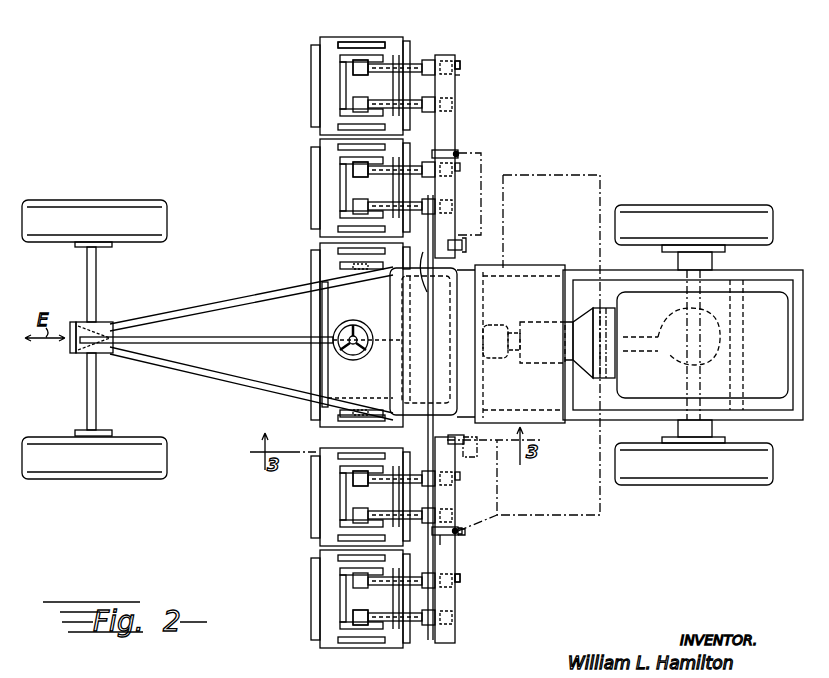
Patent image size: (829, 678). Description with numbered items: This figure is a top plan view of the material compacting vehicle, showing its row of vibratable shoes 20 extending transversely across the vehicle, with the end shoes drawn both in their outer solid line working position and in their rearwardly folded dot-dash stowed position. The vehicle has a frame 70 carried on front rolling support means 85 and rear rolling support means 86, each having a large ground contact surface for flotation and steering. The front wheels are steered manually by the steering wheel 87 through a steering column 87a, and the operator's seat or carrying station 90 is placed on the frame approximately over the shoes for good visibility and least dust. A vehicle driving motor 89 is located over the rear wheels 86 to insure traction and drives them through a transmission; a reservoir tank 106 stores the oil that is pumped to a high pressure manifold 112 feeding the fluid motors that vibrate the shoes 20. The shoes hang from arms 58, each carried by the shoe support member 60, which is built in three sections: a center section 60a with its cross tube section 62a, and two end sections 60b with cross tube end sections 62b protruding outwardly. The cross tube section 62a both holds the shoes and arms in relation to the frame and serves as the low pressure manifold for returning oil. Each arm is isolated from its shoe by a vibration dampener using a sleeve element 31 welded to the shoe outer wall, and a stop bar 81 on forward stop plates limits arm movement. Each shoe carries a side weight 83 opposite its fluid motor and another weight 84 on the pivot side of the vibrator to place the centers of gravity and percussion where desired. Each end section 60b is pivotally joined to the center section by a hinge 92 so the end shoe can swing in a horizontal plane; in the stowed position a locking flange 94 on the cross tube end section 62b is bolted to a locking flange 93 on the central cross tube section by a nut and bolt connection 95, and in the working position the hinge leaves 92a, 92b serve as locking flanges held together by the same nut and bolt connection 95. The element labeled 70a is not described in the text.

The vibratable shoe 20 is at (308, 163).
The sleeve element 31 is at (370, 478).
The arm 58 is at (375, 97).
The shoe support member 60 is at (457, 470).
The center section 60a is at (503, 178).
The end section 60b is at (458, 78).
The cross tube section 62a is at (440, 457).
The cross tube end section 62b is at (445, 116).
The frame 70 is at (247, 297).
The frame cross member 70a is at (476, 301).
The stop bar 81 is at (410, 600).
The side weight 83 is at (355, 42).
The weight 84 is at (392, 190).
The rolling support means 85 is at (156, 220).
The rolling support means 86 is at (736, 216).
The steering wheel 87 is at (366, 318).
The steering column 87a is at (248, 343).
The vehicle driving motor 89 is at (702, 345).
The operator's seat or carrying station 90 is at (427, 341).
The hinge 92 is at (457, 152).
The hinge leaf 92a is at (445, 545).
The hinge leaf 92b is at (462, 533).
The locking flange 93 is at (455, 245).
The locking flange 94 is at (460, 62).
The nut and bolt connection 95 is at (466, 250).
The reservoir tank 106 is at (549, 337).
The high pressure manifold 112 is at (430, 282).